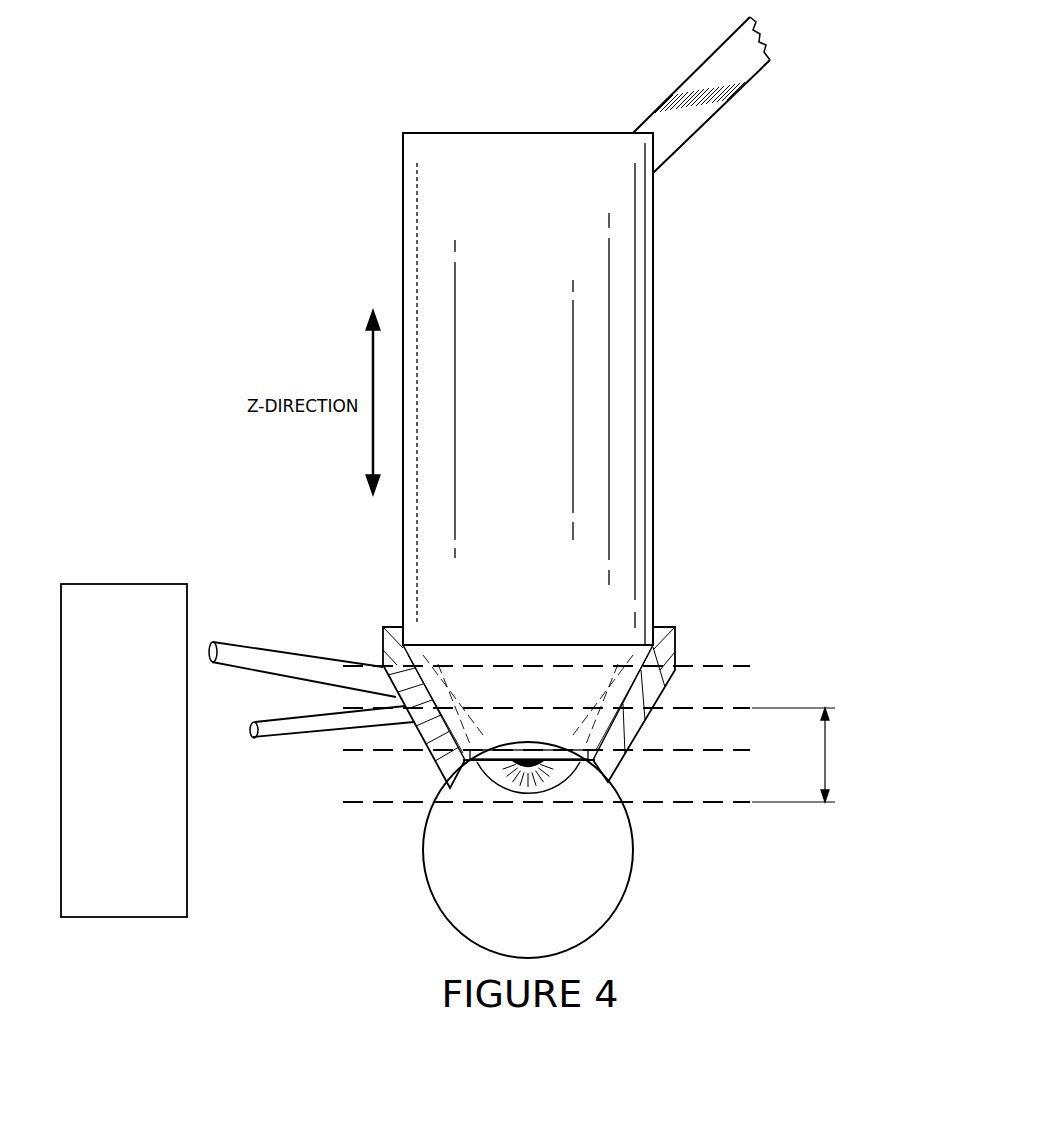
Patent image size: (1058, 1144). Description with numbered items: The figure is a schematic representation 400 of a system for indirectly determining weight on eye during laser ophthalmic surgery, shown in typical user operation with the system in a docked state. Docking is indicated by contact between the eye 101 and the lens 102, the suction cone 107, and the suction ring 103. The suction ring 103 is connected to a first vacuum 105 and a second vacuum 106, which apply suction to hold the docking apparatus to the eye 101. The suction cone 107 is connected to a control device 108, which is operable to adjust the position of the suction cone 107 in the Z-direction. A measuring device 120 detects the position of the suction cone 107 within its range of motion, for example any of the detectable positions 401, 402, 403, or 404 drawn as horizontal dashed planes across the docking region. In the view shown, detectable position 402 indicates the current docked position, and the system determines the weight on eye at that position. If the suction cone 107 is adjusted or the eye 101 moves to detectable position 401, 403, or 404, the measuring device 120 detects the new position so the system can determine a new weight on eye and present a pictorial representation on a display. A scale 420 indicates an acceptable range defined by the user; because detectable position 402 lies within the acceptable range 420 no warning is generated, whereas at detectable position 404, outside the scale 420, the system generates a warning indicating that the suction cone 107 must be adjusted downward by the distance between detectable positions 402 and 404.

The schematic representation 400 is at (340, 68).
The eye 101 is at (424, 850).
The lens 102 is at (540, 752).
The suction ring 103 is at (440, 762).
The first vacuum 105 is at (290, 737).
The second vacuum 106 is at (294, 651).
The suction cone 107 is at (655, 390).
The control device 108 is at (704, 62).
The measuring device 120 is at (105, 793).
The detectable position 401 is at (683, 805).
The detectable position 402 is at (700, 753).
The detectable position 403 is at (714, 711).
The detectable position 404 is at (715, 664).
The scale 420 is at (826, 755).